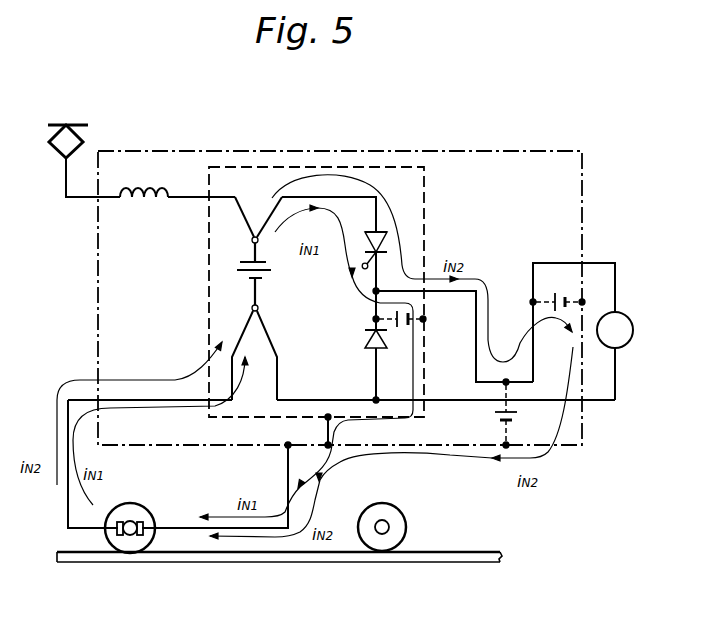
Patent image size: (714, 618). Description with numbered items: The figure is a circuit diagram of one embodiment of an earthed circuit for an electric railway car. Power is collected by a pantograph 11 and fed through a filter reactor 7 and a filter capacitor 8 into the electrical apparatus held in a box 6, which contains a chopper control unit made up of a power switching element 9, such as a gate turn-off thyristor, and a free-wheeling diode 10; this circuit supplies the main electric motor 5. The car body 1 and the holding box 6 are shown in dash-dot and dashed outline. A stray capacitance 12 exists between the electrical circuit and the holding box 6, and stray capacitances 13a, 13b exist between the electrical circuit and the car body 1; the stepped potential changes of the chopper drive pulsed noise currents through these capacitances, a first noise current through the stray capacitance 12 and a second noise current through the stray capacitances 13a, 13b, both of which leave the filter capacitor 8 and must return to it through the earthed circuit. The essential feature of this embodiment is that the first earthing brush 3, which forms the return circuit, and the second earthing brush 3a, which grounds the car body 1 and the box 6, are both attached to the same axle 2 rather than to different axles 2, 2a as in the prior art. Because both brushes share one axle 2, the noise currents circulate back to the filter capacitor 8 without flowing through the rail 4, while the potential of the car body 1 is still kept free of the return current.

The car body 1 is at (283, 150).
The axle 2 is at (148, 512).
The axle 2a is at (386, 503).
The first earthing brush 3 is at (120, 538).
The second earthing brush 3a is at (140, 538).
The rail 4 is at (250, 565).
The main electric motor 5 is at (626, 343).
The box 6 is at (362, 167).
The filter reactor 7 is at (158, 188).
The filter capacitor 8 is at (268, 272).
The power switching element 9 is at (387, 245).
The free-wheeling diode 10 is at (365, 339).
The pantograph 11 is at (84, 142).
The stray capacitance 12 is at (401, 330).
The stray capacitance 13a is at (554, 296).
The stray capacitance 13b is at (495, 413).